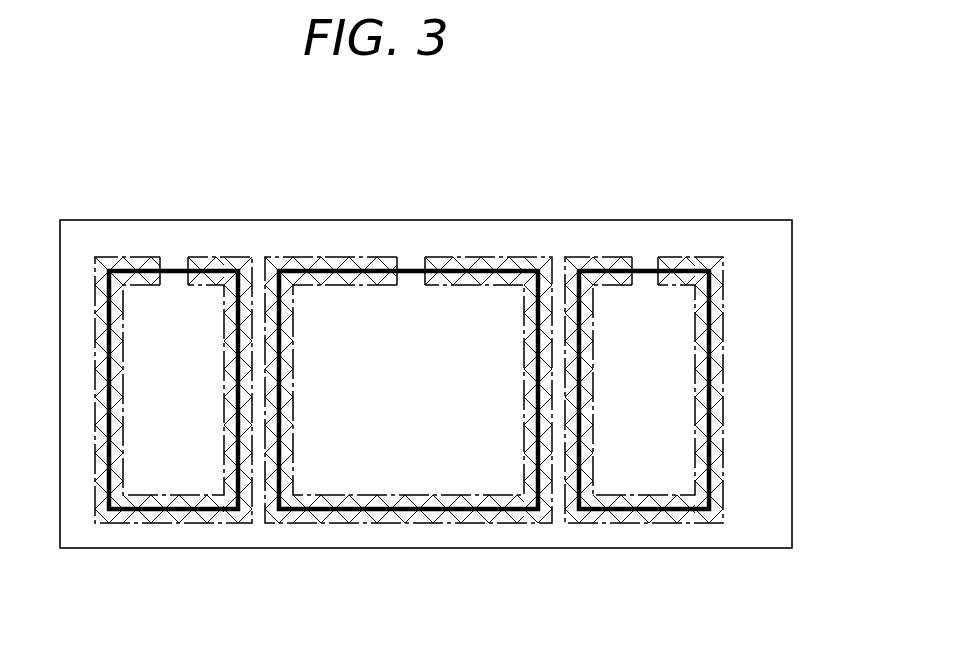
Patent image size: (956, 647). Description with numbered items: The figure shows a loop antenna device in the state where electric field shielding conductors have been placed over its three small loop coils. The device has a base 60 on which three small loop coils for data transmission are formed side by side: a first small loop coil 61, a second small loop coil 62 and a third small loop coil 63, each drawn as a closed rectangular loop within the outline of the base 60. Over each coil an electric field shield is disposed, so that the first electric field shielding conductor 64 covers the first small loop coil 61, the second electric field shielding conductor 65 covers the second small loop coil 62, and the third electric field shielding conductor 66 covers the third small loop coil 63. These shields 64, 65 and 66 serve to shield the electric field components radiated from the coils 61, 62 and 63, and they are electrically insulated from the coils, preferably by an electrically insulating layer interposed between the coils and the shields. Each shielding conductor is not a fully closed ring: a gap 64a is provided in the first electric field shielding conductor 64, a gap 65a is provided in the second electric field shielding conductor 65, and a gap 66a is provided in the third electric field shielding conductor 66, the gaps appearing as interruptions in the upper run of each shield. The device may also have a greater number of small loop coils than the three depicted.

The base 60 is at (792, 286).
The first small loop coil 61 is at (367, 510).
The second small loop coil 62 is at (140, 508).
The third small loop coil 63 is at (610, 512).
The first electric field shielding conductor 64 is at (463, 525).
The gap 64a is at (408, 250).
The second electric field shielding conductor 65 is at (205, 523).
The gap 65a is at (173, 250).
The third electric field shielding conductor 66 is at (678, 523).
The gap 66a is at (641, 250).